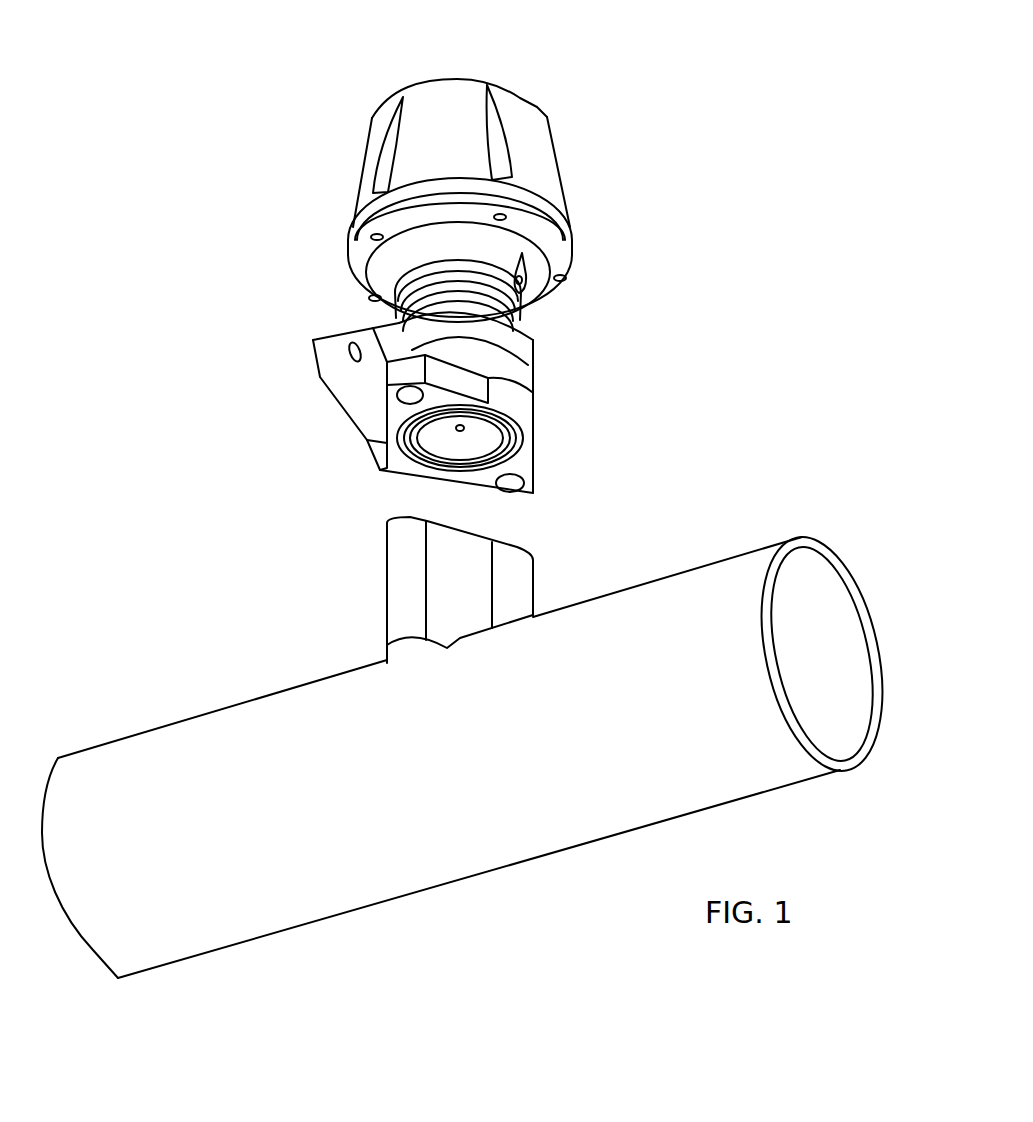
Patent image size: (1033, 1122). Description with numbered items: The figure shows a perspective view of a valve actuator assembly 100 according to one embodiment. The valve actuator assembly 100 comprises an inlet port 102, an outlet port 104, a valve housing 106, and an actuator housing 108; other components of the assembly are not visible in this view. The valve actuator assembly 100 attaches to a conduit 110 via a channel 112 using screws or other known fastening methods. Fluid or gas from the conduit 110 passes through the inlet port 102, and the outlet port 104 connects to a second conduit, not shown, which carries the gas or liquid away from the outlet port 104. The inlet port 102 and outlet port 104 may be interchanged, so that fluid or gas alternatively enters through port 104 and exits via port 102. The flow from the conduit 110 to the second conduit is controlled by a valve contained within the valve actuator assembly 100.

The valve actuator assembly 100 is at (641, 97).
The inlet port 102 is at (480, 427).
The outlet port 104 is at (318, 428).
The valve housing 106 is at (535, 360).
The actuator housing 108 is at (360, 187).
The conduit 110 is at (760, 545).
The channel 112 is at (530, 557).